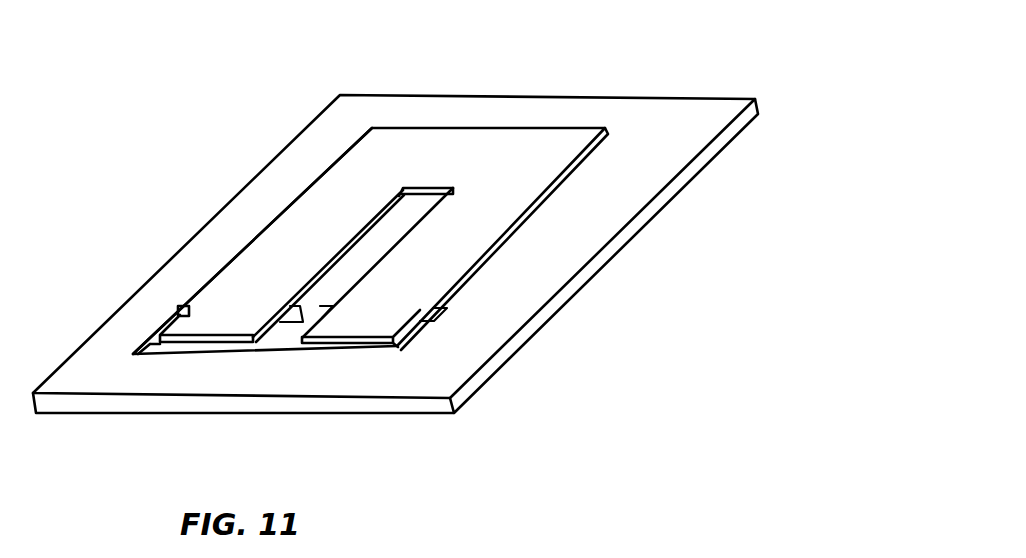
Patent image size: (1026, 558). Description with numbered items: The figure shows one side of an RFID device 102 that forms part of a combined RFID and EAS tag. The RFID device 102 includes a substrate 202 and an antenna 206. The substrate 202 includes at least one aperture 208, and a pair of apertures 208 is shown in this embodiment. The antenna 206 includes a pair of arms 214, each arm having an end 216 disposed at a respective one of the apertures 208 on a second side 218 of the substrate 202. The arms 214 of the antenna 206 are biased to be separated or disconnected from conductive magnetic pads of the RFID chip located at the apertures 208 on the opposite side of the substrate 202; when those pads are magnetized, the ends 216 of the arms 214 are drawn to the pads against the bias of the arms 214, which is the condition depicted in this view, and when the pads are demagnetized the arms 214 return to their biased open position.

The RFID device 102 is at (423, 241).
The substrate 202 is at (423, 231).
The antenna 206 is at (370, 207).
The aperture 208 is at (247, 329).
The arms 214 is at (313, 206).
The end 216 is at (200, 321).
The second side 218 is at (682, 153).